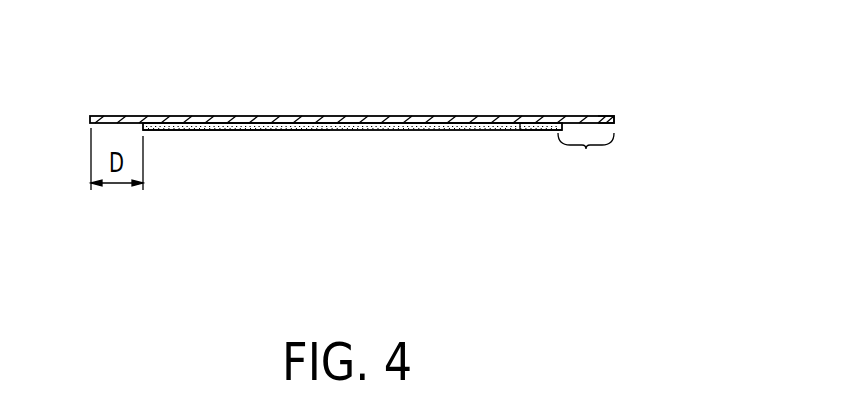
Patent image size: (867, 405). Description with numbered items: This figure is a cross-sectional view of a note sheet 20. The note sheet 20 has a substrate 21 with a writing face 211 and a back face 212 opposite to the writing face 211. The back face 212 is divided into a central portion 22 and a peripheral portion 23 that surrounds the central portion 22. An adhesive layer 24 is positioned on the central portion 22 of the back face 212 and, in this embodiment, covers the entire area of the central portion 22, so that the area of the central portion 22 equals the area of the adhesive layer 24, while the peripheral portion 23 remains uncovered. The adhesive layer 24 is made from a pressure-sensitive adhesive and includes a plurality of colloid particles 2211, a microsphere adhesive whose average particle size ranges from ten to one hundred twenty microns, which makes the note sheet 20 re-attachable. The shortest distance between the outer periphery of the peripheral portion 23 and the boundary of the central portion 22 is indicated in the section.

The note sheet 20 is at (406, 125).
The substrate 21 is at (617, 117).
The writing face 211 is at (598, 113).
The central portion 22 is at (328, 132).
The colloid particles 2211 is at (411, 132).
The back face 212 is at (517, 132).
The peripheral portion 23 is at (586, 161).
The adhesive layer 24 is at (238, 133).